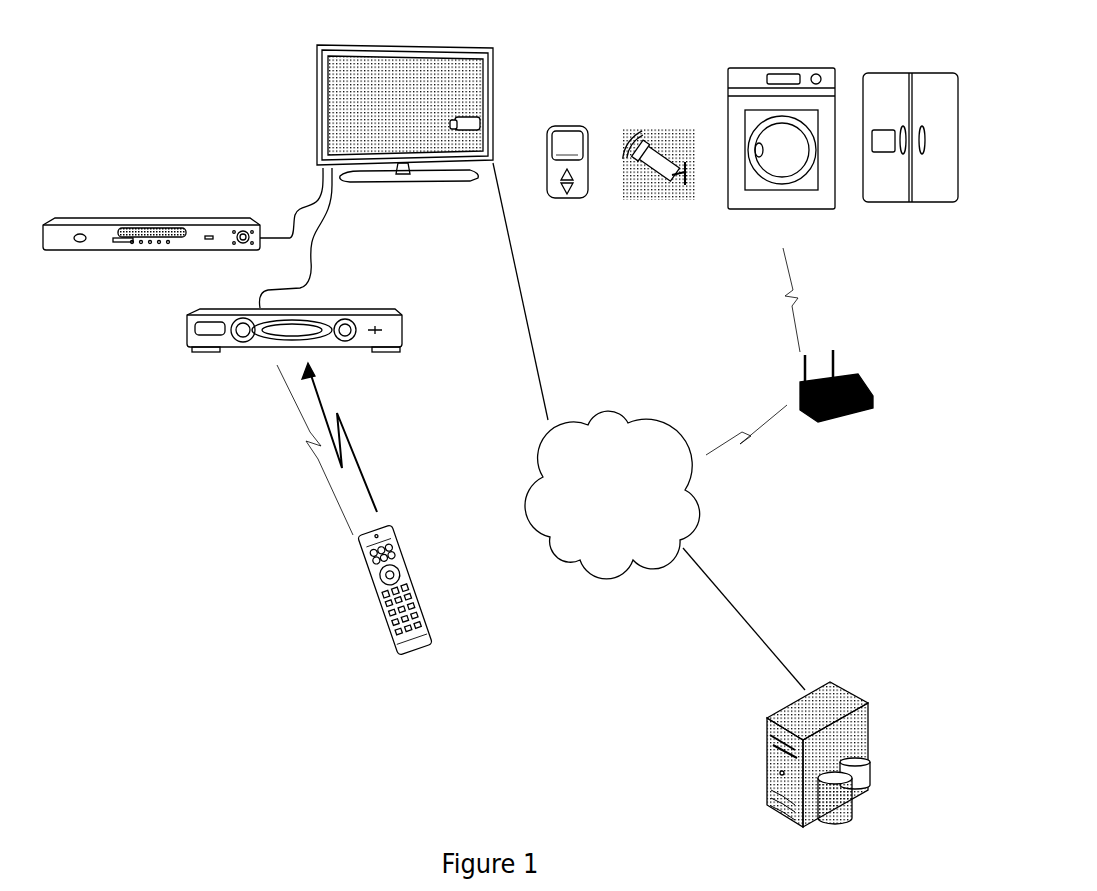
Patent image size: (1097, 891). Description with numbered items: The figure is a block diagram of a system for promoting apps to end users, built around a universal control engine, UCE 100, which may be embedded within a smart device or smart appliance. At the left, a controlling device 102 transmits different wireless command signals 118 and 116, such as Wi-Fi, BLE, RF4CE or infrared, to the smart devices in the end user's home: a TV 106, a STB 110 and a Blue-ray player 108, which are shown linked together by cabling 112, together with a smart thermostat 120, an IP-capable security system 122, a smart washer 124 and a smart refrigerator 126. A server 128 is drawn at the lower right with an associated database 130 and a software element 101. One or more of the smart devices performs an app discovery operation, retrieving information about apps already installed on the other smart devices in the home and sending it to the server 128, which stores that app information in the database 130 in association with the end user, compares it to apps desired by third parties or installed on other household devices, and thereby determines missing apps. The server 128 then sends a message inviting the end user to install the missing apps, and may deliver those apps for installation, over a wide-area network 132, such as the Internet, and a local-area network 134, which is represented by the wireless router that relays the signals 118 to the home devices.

The UCE 100 is at (490, 97).
The software/application on server 101 is at (858, 758).
The controlling device 102 is at (420, 641).
The TV 106 is at (403, 180).
The Blue-ray player 108 is at (128, 250).
The STB 110 is at (238, 349).
The cables 112 is at (310, 170).
The wireless command signal 116 is at (360, 456).
The wireless command signal 118 is at (300, 440).
The smart thermostat 120 is at (575, 126).
The IP-capable security system 122 is at (655, 140).
The smart washer 124 is at (790, 68).
The smart refrigerator 126 is at (888, 73).
The server 128 is at (838, 690).
The database 130 is at (846, 824).
The wide-area network 132 is at (594, 578).
The local-area network 134 is at (848, 428).